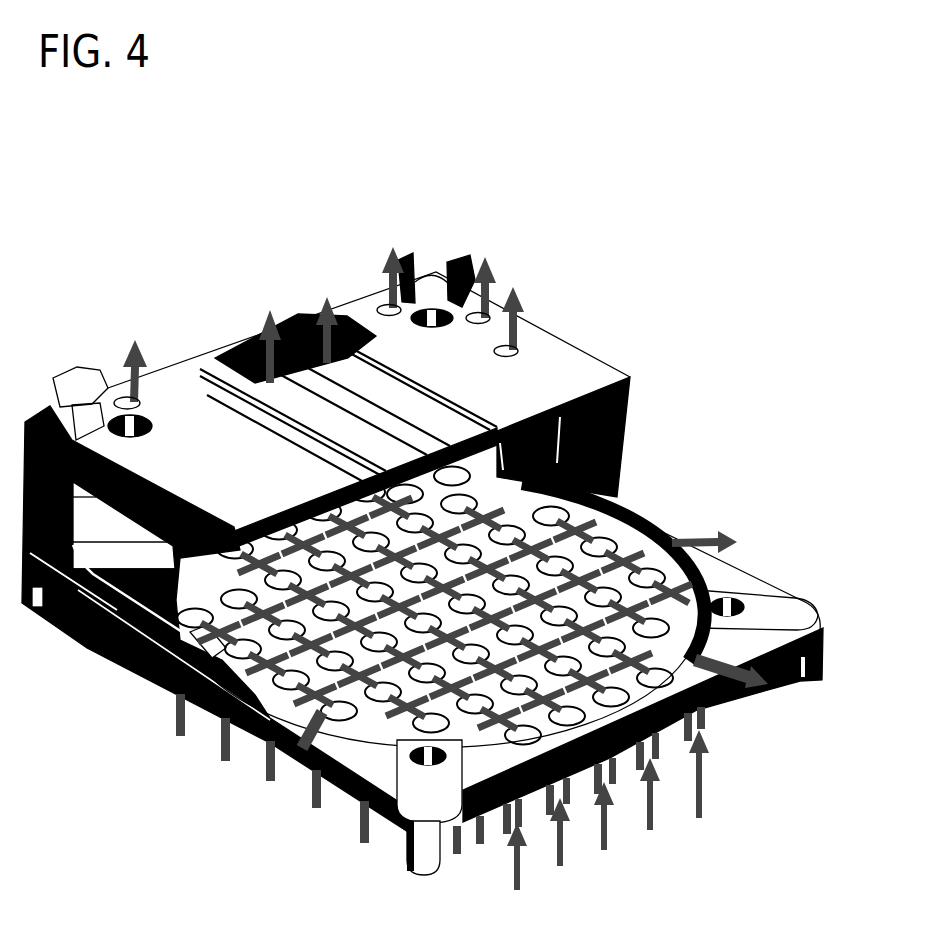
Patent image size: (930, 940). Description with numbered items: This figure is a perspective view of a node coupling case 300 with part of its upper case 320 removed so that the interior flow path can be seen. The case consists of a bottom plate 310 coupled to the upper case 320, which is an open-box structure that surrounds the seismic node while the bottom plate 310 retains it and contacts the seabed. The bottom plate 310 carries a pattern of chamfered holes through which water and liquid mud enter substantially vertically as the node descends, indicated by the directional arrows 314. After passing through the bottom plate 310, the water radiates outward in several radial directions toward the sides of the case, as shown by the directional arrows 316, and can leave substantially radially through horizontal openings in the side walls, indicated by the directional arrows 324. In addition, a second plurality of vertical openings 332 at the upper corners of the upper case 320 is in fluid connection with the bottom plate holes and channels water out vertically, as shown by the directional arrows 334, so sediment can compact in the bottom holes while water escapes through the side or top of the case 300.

The node coupling case 300 is at (351, 184).
The bottom plate 310 is at (142, 657).
The directional arrows 314 is at (700, 816).
The directional arrows 316 is at (268, 742).
The upper case 320 is at (580, 347).
The directional arrows 324 is at (717, 532).
The second plurality of vertical openings 332 is at (117, 397).
The directional arrows 334 is at (330, 318).